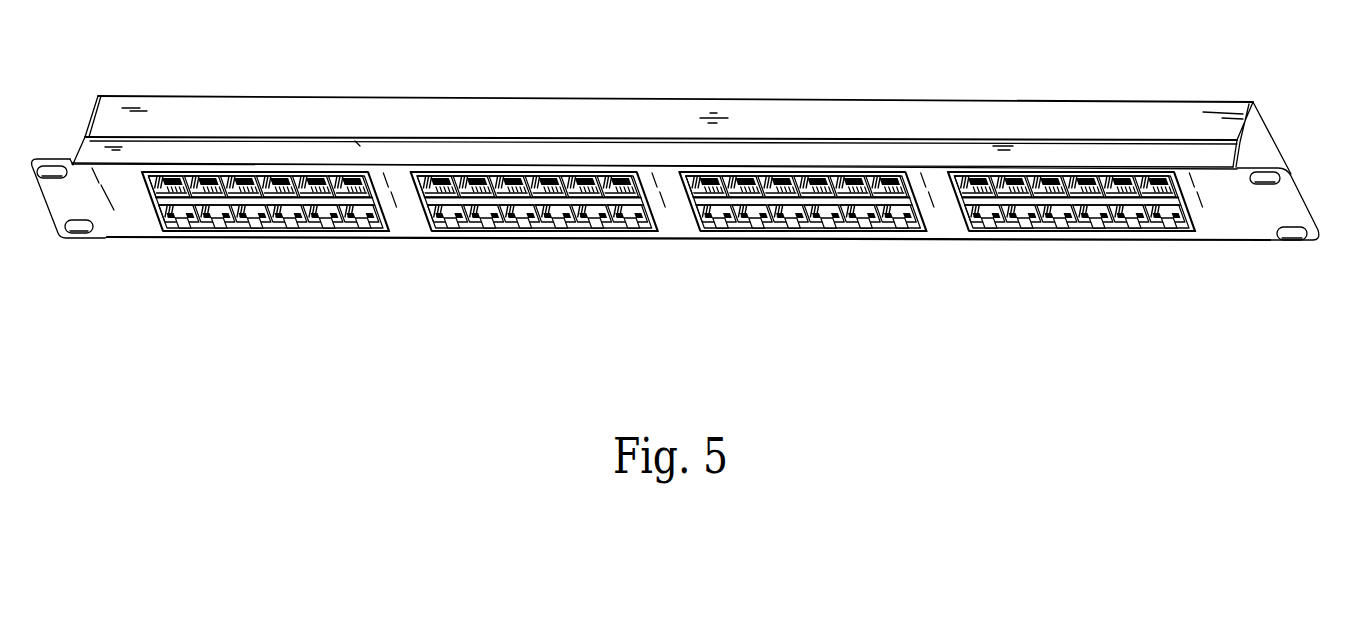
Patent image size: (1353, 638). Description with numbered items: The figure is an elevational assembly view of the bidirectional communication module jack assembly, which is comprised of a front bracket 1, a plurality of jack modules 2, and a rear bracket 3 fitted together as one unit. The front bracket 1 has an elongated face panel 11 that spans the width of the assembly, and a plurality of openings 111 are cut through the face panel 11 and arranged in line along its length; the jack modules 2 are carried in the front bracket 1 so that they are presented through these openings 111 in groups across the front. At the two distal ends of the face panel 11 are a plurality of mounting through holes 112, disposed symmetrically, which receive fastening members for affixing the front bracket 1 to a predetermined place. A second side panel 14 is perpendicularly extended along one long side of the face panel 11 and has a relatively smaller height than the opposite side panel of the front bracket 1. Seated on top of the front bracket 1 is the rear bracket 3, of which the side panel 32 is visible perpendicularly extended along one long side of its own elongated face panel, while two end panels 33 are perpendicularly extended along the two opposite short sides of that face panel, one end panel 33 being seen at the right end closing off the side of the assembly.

The front bracket 1 is at (692, 260).
The face panel 11 is at (147, 237).
The openings 111 is at (278, 228).
The mounting through holes 112 is at (51, 165).
The second side panel 14 is at (357, 143).
The jack modules 2 is at (352, 229).
The rear bracket 3 is at (718, 87).
The side panel 32 is at (497, 115).
The end panels 33 is at (1253, 140).